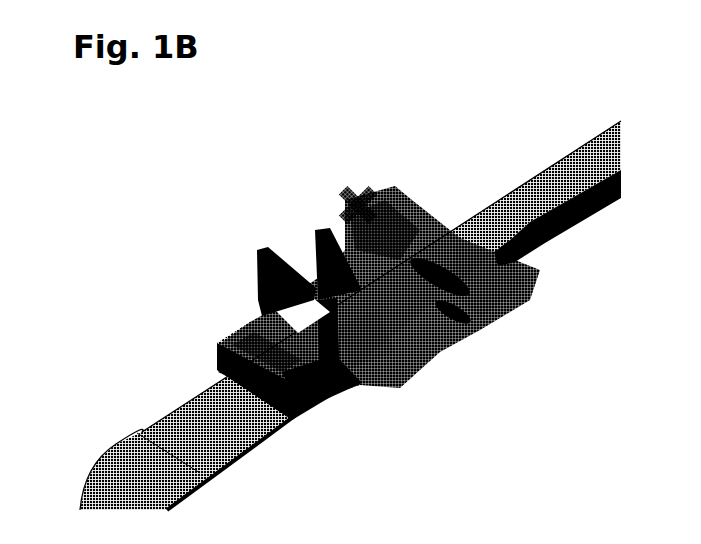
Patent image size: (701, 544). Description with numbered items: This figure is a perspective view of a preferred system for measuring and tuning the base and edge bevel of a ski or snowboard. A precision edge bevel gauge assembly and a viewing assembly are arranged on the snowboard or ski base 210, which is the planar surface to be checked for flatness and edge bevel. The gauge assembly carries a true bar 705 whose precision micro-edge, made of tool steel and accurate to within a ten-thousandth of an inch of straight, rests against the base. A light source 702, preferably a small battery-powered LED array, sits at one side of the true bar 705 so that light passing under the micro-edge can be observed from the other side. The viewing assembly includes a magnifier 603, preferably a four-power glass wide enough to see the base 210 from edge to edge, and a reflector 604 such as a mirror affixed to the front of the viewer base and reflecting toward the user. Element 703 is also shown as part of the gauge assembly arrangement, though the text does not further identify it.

The snowboard or ski base 210 is at (525, 190).
The magnifier 603 is at (290, 252).
The reflector 604 is at (287, 333).
The light source 702 is at (480, 320).
The mechanism 703 is at (410, 228).
The true bar 705 is at (396, 298).